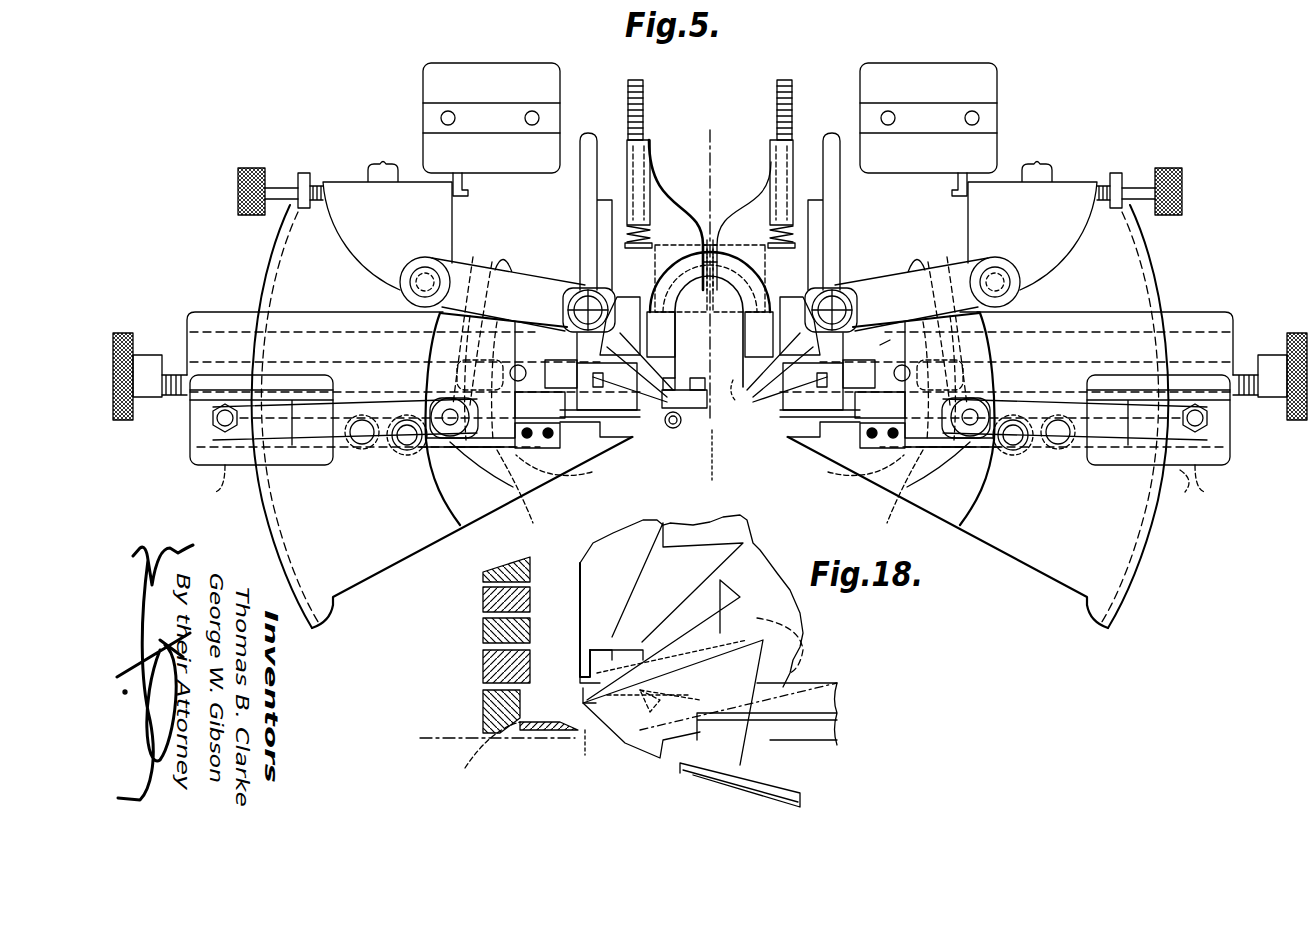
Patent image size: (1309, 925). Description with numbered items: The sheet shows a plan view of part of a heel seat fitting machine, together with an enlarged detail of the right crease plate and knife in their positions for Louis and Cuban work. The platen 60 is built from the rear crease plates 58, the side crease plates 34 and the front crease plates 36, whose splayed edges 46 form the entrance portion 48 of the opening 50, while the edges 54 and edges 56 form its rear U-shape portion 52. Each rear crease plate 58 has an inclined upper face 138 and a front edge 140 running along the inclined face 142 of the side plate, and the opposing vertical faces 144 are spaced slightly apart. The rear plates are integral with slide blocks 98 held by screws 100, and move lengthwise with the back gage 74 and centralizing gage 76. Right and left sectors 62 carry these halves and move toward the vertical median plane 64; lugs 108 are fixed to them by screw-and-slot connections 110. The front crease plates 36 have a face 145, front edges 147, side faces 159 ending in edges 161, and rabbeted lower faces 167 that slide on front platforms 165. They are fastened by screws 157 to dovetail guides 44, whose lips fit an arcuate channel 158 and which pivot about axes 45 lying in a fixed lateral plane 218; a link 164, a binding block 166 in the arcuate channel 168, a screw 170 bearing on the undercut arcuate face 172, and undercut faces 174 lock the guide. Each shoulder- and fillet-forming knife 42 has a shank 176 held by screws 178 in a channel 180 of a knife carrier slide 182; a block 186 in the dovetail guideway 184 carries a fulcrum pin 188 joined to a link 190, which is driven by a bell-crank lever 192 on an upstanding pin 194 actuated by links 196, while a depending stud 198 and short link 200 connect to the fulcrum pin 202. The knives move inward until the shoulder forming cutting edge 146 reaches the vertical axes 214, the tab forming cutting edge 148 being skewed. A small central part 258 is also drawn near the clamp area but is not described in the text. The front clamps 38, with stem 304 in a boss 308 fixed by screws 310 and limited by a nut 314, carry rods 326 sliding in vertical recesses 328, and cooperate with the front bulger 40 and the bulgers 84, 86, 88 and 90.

In FIG. 5, the side crease plate 34 is at (802, 337).
In FIG. 18, the side crease plate 34 is at (690, 525).
In FIG. 5, the front crease plate 36 is at (612, 409).
In FIG. 18, the front crease plate 36 is at (785, 660).
In FIG. 5, the front clamp 38 is at (643, 446).
In FIG. 18, the front clamp 38 is at (575, 720).
In FIG. 18, the front bulger 40 is at (483, 705).
In FIG. 5, the shoulder- and fillet-forming knife 42 is at (605, 485).
In FIG. 18, the shoulder- and fillet-forming knife 42 is at (832, 735).
In FIG. 5, the dovetail guide 44 is at (187, 335).
In FIG. 5, the axis 45 is at (773, 467).
In FIG. 18, the axis 45 is at (575, 760).
In FIG. 5, the splayed edge 46 is at (766, 440).
In FIG. 18, the splayed edge 46 is at (596, 750).
In FIG. 5, the splayed opening or entrance portion 48 is at (721, 453).
In FIG. 5, the opening 50 is at (722, 435).
In FIG. 5, the rear U-shape portion 52 is at (746, 283).
In FIG. 5, the edge 54 is at (690, 326).
In FIG. 18, the edge 54 is at (580, 592).
In FIG. 5, the edge 56 is at (701, 283).
In FIG. 5, the rear crease plate 58 is at (650, 262).
In FIG. 5, the platen 60 is at (779, 276).
In FIG. 5, the sector or carrier 62 is at (262, 520).
In FIG. 5, the central heightwise or vertical median plane 64 is at (706, 148).
In FIG. 5, the back gage 74 is at (661, 257).
In FIG. 5, the centralizing gage 76 is at (659, 289).
In FIG. 18, the bulger 84 is at (483, 665).
In FIG. 18, the bulger 86 is at (483, 630).
In FIG. 18, the bulger 88 is at (483, 600).
In FIG. 18, the bulger 90 is at (483, 573).
In FIG. 5, the slide block 98 is at (650, 150).
In FIG. 5, the screw 100 is at (643, 98).
In FIG. 5, the lug 108 is at (452, 223).
In FIG. 5, the screw-and-slot connection 110 is at (368, 180).
In FIG. 5, the upper face 138 is at (711, 267).
In FIG. 5, the front edge 140 is at (712, 334).
In FIG. 5, the inclined face 142 is at (732, 352).
In FIG. 18, the inclined face 142 is at (592, 564).
In FIG. 5, the vertical face 144 is at (712, 248).
In FIG. 5, the face 145 is at (805, 375).
In FIG. 18, the face 145 is at (677, 668).
In FIG. 18, the shoulder forming cutting edge 146 is at (700, 770).
In FIG. 5, the front edge 147 is at (728, 468).
In FIG. 18, the front edge 147 is at (615, 765).
In FIG. 18, the tab forming cutting edge 148 is at (680, 762).
In FIG. 5, the screw 157 is at (858, 354).
In FIG. 5, the arcuate channel 158 is at (478, 512).
In FIG. 18, the side face 159 is at (593, 695).
In FIG. 5, the edge 161 is at (739, 383).
In FIG. 18, the edge 161 is at (590, 680).
In FIG. 5, the link 164 is at (515, 368).
In FIG. 18, the front platform 165 is at (612, 650).
In FIG. 5, the binding block 166 is at (882, 340).
In FIG. 18, the rabbeted lower face 167 is at (680, 694).
In FIG. 5, the arcuate channel 168 is at (532, 480).
In FIG. 5, the screw 170 is at (118, 420).
In FIG. 5, the undercut arcuate face 172 is at (270, 553).
In FIG. 5, the undercut face 174 is at (710, 491).
In FIG. 5, the rectangular shank 176 is at (570, 465).
In FIG. 5, the screw 178 is at (520, 448).
In FIG. 5, the channel 180 is at (710, 405).
In FIG. 5, the knife carrier slide 182 is at (1178, 312).
In FIG. 5, the dovetail guideway 184 is at (1192, 484).
In FIG. 5, the block 186 is at (200, 438).
In FIG. 5, the fulcrum pin 188 is at (195, 460).
In FIG. 5, the link 190 is at (340, 448).
In FIG. 5, the bell-crank lever 192 is at (466, 272).
In FIG. 5, the upstanding pin 194 is at (425, 282).
In FIG. 5, the link 196 is at (582, 204).
In FIG. 5, the depending stud 198 is at (1058, 418).
In FIG. 5, the short link 200 is at (382, 404).
In FIG. 5, the fulcrum pin 202 is at (448, 425).
In FIG. 5, the vertical axis 214 is at (730, 463).
In FIG. 18, the vertical axis 214 is at (465, 768).
In FIG. 18, the fixed lateral plane 218 is at (450, 740).
In FIG. 5, the tee block 258 is at (683, 384).
In FIG. 5, the cylindrical stem 304 is at (678, 430).
In FIG. 5, the boss 308 is at (672, 479).
In FIG. 5, the screw 310 is at (702, 445).
In FIG. 5, the nut 314 is at (672, 459).
In FIG. 5, the rod 326 is at (710, 367).
In FIG. 5, the vertical recess 328 is at (828, 358).